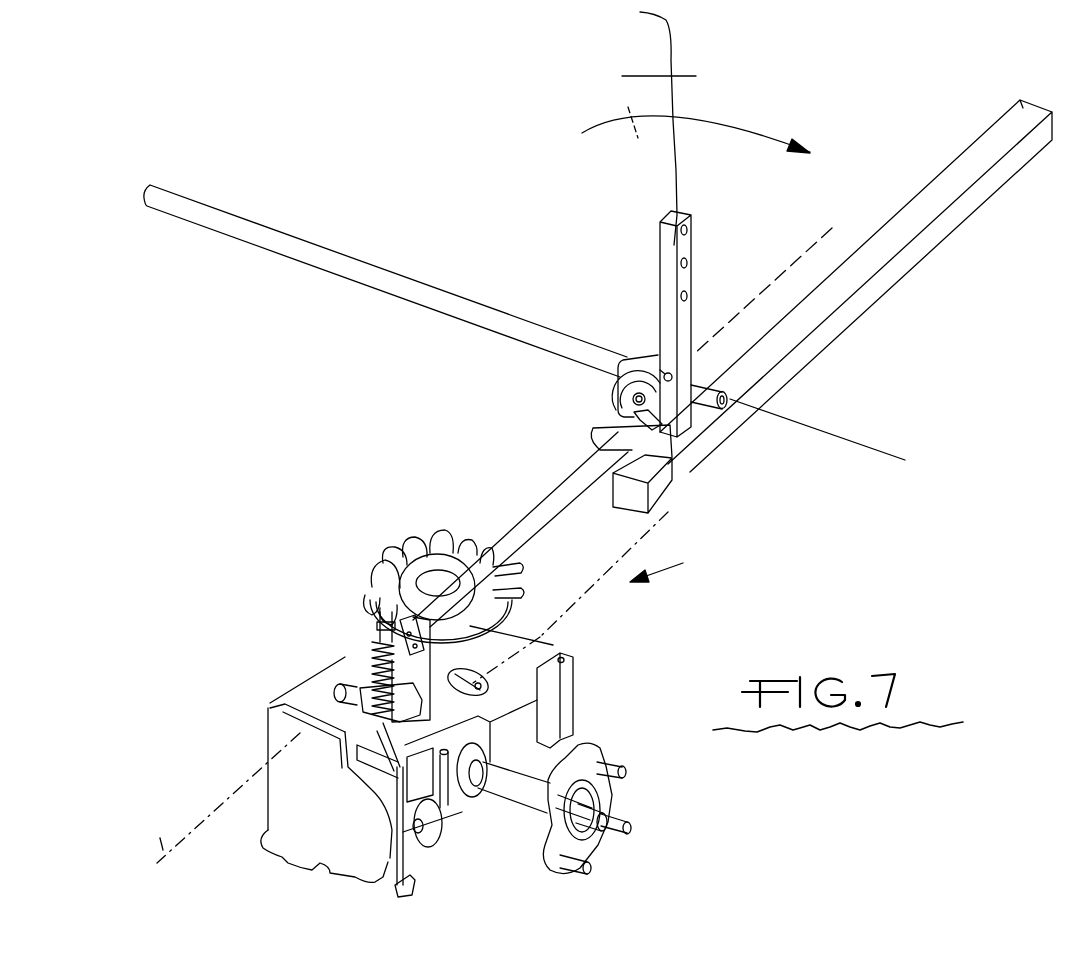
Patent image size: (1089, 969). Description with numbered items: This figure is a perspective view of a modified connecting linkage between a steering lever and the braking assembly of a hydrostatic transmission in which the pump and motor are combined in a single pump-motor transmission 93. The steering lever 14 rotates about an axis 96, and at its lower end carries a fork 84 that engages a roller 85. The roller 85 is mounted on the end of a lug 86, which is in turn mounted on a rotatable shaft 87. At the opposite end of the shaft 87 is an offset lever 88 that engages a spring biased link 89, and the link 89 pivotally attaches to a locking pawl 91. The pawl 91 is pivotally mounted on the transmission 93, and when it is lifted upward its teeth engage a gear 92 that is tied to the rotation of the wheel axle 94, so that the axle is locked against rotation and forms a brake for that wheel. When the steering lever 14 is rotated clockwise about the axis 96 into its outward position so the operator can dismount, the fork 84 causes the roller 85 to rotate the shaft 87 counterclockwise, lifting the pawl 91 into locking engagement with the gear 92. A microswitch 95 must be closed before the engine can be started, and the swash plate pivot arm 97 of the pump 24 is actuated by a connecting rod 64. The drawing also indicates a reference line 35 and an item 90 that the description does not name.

The steering lever 14 is at (660, 262).
The axis 96 is at (800, 252).
The axis line 35 is at (810, 432).
The fork 84 is at (618, 362).
The roller 85 is at (628, 394).
The lug 86 is at (625, 406).
The rotatable shaft 87 is at (570, 492).
The connecting rod 64 is at (668, 512).
The pump-motor transmission 93 is at (677, 566).
The pump 24 is at (537, 641).
The microswitch 95 is at (392, 614).
The spring 90 is at (380, 684).
The spring biased link 89 is at (400, 790).
The locking pawl 91 is at (423, 858).
The gear 92 is at (430, 810).
The wheel axle 94 is at (520, 783).
The offset lever 88 is at (405, 698).
The swash plate pivot arm 97 is at (480, 680).